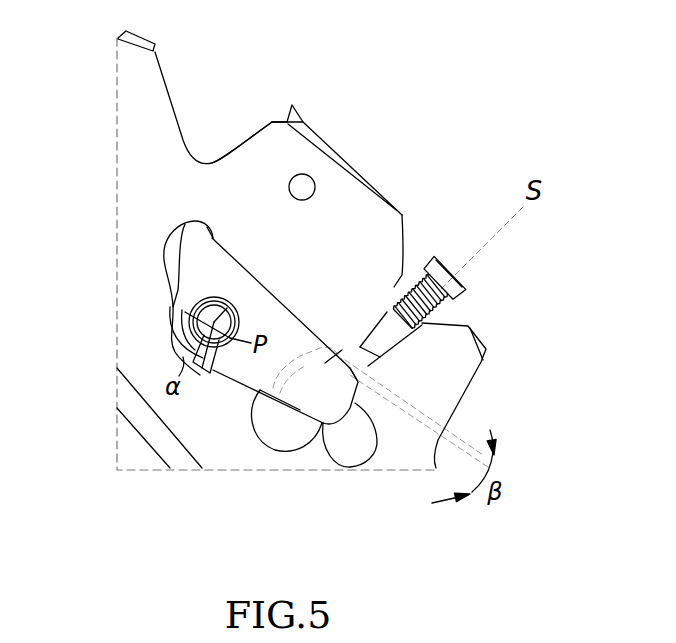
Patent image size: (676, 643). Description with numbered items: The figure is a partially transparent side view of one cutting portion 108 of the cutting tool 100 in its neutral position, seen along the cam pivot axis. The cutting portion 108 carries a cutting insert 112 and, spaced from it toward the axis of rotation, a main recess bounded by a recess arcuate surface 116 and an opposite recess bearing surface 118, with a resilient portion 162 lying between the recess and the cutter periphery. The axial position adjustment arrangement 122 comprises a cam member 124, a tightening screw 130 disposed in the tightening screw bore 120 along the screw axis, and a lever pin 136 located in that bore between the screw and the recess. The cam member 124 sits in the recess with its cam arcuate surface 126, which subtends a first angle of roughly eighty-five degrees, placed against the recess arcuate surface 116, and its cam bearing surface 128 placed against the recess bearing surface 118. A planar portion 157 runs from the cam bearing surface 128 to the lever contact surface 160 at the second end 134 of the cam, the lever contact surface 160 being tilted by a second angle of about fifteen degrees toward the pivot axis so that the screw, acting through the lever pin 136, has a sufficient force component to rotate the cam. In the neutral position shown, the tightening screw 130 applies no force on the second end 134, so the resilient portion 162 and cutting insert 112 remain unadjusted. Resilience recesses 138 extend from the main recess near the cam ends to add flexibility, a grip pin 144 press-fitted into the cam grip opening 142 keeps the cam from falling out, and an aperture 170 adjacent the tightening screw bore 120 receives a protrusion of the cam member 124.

The cutting tool 100 is at (445, 60).
The cutting portion 108 is at (468, 205).
The cutting insert 112 is at (300, 108).
The recess arcuate surface 116 is at (170, 365).
The recess bearing surface 118 is at (210, 233).
The tightening screw bore 120 is at (425, 330).
The axial position adjustment arrangement 122 is at (508, 305).
The cam member 124 is at (279, 321).
The cam arcuate surface 126 is at (180, 340).
The cam bearing surface 128 is at (215, 240).
The tightening screw 130 is at (468, 283).
The second end 134 is at (323, 423).
The lever pin 136 is at (368, 348).
The resilience recesses 138 is at (181, 231).
The cam grip opening 142 is at (215, 353).
The grip pin 144 is at (175, 307).
The planar portion 157 is at (238, 258).
The lever contact surface 160 is at (328, 367).
The resilient portion 162 is at (350, 200).
The aperture 170 is at (293, 435).